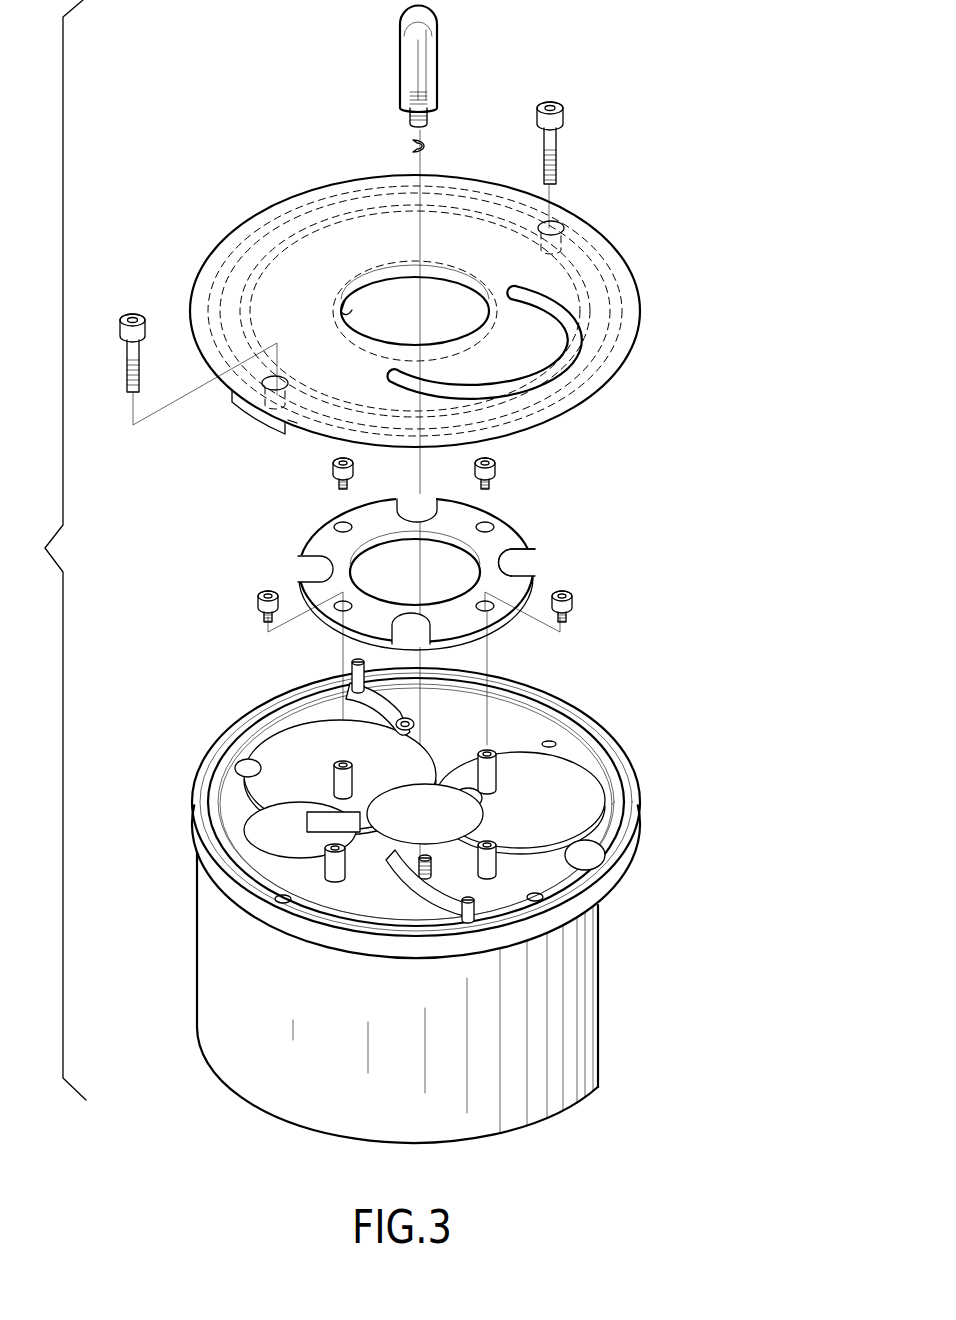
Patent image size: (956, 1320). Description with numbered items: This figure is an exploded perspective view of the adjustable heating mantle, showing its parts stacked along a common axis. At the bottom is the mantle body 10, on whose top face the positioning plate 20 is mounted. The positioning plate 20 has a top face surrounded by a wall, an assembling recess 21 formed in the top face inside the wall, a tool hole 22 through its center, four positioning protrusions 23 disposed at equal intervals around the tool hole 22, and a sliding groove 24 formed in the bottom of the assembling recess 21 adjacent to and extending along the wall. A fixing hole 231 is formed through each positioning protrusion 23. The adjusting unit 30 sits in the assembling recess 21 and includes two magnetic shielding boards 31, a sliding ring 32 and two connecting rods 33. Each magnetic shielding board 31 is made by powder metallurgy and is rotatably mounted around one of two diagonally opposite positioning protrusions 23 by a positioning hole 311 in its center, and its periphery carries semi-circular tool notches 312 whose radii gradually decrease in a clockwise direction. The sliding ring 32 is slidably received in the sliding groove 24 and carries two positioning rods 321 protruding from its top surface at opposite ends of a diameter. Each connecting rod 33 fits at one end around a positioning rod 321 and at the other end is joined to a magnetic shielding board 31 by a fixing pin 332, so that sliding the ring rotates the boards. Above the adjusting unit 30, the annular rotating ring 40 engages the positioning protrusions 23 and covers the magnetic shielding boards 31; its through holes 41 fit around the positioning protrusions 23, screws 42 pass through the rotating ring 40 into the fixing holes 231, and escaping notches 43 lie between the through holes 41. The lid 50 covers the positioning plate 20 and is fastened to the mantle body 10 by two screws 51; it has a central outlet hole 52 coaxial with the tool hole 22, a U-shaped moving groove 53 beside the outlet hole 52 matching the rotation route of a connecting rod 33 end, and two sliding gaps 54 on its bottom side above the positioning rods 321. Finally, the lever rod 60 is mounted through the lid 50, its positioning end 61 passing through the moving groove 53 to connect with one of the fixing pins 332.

The mantle body 10 is at (610, 1030).
The positioning plate 20 is at (610, 886).
The assembling recess 21 is at (515, 730).
The tool hole 22 is at (370, 860).
The positioning protrusions 23 is at (492, 776).
The fixing hole 231 is at (495, 750).
The sliding groove 24 is at (615, 755).
The adjusting unit 30 is at (398, 781).
The magnetic shielding board 31 is at (285, 735).
The positioning hole 311 is at (338, 775).
The tool notches 312 is at (255, 758).
The sliding ring 32 is at (205, 808).
The positioning rods 321 is at (350, 668).
The connecting rods 33 is at (395, 705).
The fixing pin 332 is at (428, 858).
The rotating ring 40 is at (290, 540).
The through holes 41 is at (490, 523).
The screws 42 is at (568, 600).
The escaping notches 43 is at (525, 565).
The lid 50 is at (585, 228).
The screws 51 is at (562, 118).
The outlet hole 52 is at (349, 302).
The moving groove 53 is at (560, 372).
The sliding gaps 54 is at (300, 432).
The lever rod 60 is at (412, 58).
The positioning end 61 is at (405, 112).